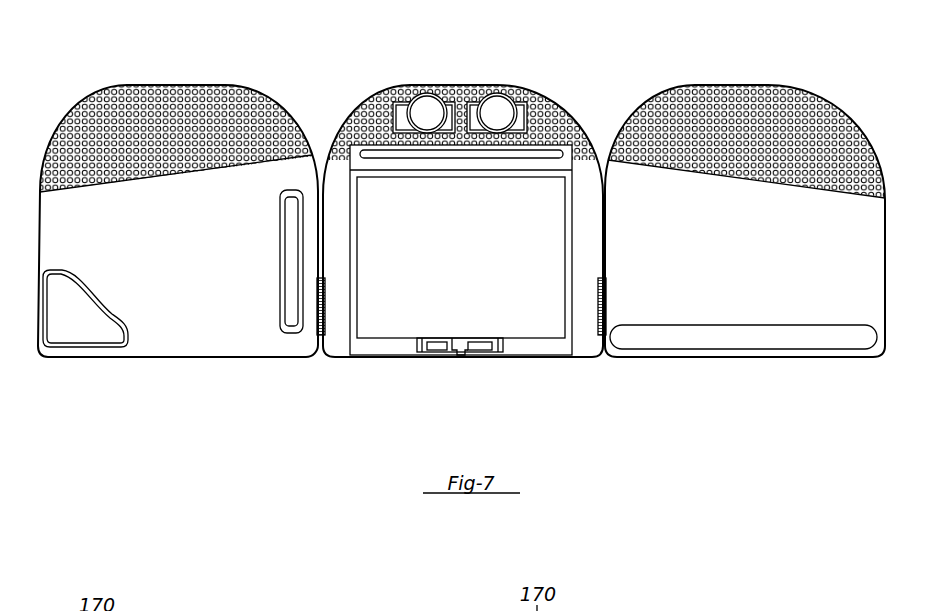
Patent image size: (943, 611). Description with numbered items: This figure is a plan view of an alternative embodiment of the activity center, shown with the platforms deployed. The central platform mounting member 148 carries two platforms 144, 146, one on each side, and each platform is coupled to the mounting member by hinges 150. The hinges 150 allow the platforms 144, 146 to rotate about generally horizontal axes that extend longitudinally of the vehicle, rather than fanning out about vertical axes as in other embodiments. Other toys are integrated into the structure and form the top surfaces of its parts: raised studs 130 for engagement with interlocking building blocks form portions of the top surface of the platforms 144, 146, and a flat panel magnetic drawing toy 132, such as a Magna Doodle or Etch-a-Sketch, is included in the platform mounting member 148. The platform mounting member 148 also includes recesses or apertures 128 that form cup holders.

The raised studs 130 is at (147, 90).
The recesses or apertures 128 is at (408, 106).
The magnetic drawing toy 132 is at (568, 185).
The platform 146 is at (205, 308).
The platform 144 is at (793, 248).
The hinges 150 is at (325, 310).
The platform mounting member 148 is at (403, 360).